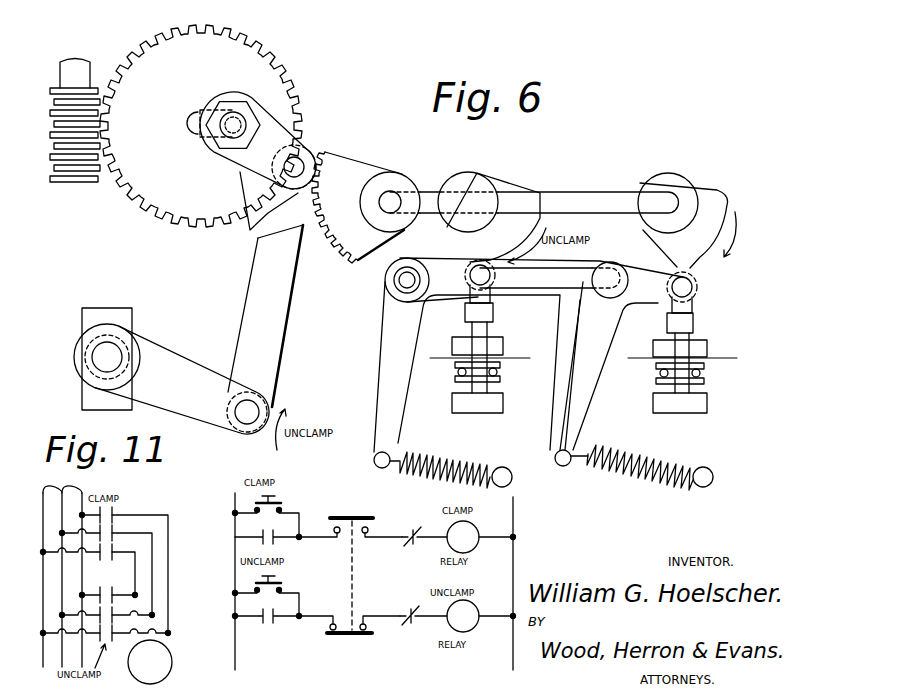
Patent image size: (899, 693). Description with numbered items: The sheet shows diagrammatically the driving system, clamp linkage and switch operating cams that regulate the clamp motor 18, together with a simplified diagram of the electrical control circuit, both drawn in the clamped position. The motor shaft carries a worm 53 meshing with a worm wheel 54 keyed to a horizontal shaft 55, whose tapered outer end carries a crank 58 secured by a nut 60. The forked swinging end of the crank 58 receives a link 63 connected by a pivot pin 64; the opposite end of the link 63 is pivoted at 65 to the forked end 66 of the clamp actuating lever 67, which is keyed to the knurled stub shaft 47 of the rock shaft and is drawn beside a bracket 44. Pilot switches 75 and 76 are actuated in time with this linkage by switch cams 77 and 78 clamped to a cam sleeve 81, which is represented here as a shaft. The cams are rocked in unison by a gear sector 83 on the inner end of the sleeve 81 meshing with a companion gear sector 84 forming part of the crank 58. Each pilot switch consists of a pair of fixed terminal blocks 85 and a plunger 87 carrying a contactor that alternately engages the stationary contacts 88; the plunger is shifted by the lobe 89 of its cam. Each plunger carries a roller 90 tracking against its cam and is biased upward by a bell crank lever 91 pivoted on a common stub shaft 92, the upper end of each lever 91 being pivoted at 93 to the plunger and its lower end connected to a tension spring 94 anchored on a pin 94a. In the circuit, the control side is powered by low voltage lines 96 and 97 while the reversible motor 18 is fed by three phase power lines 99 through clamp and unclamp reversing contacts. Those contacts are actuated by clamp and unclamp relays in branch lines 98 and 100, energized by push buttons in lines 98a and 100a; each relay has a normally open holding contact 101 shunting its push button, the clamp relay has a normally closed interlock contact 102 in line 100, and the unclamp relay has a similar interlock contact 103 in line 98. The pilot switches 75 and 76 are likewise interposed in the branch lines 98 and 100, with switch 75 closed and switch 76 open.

In FIG. 11, the clamp motor 18 is at (173, 662).
In FIG. 6, the bracket 44 is at (106, 307).
In FIG. 6, the knurled stub shaft 47 is at (100, 357).
In FIG. 6, the worm 53 is at (50, 90).
In FIG. 6, the worm wheel 54 is at (262, 48).
In FIG. 6, the horizontal shaft 55 is at (190, 118).
In FIG. 6, the crank 58 is at (282, 128).
In FIG. 6, the nut 60 is at (234, 104).
In FIG. 6, the link 63 is at (283, 300).
In FIG. 6, the pivot pin 64 is at (286, 168).
In FIG. 6, the pivot 65 is at (258, 412).
In FIG. 6, the forked end 66 is at (246, 392).
In FIG. 6, the clamp actuating lever 67 is at (185, 358).
In FIG. 6, the pilot switch 75 is at (511, 342).
In FIG. 11, the pilot switch 75 is at (352, 635).
In FIG. 6, the pilot switch 76 is at (711, 343).
In FIG. 11, the pilot switch 76 is at (353, 517).
In FIG. 6, the switch cam 77 is at (482, 184).
In FIG. 6, the switch cam 78 is at (700, 192).
In FIG. 6, the cam sleeve 81 is at (640, 192).
In FIG. 6, the gear sector 83 is at (360, 174).
In FIG. 6, the gear sector 84 is at (333, 150).
In FIG. 6, the terminal blocks 85 is at (452, 346).
In FIG. 6, the plunger 87 is at (466, 330).
In FIG. 6, the stationary contacts 88 is at (503, 378).
In FIG. 6, the lobe 89 is at (540, 195).
In FIG. 6, the roller 90 is at (493, 272).
In FIG. 6, the bell crank lever 91 is at (385, 370).
In FIG. 6, the stub shaft 92 is at (560, 276).
In FIG. 6, the pivot 93 is at (492, 292).
In FIG. 6, the tension spring 94 is at (452, 462).
In FIG. 6, the pin 94a is at (508, 474).
In FIG. 11, the low voltage line 96 is at (230, 510).
In FIG. 11, the low voltage line 97 is at (514, 510).
In FIG. 6, the branch line 98 is at (732, 358).
In FIG. 11, the branch line 98 is at (440, 523).
In FIG. 11, the push button line 98a is at (286, 512).
In FIG. 11, the three phase power lines 99 is at (50, 486).
In FIG. 6, the branch line 100 is at (521, 360).
In FIG. 11, the branch line 100 is at (402, 608).
In FIG. 11, the push button line 100a is at (286, 592).
In FIG. 11, the holding contact 101 is at (280, 540).
In FIG. 11, the interlock contact 102 is at (420, 625).
In FIG. 11, the interlock contact 103 is at (406, 532).